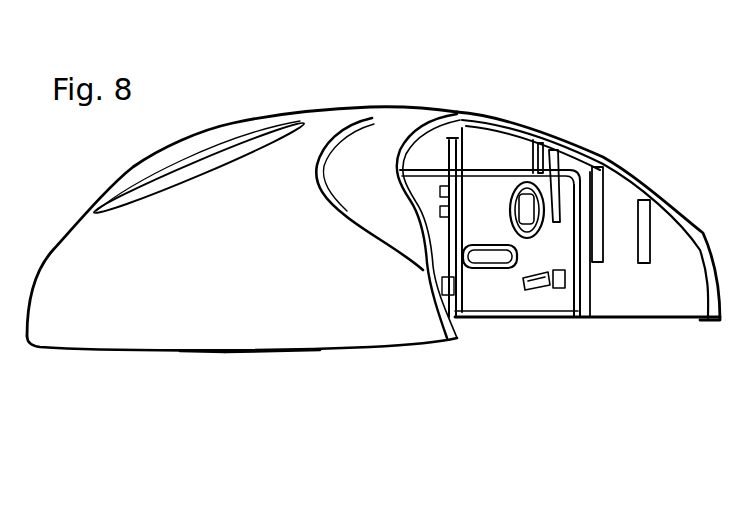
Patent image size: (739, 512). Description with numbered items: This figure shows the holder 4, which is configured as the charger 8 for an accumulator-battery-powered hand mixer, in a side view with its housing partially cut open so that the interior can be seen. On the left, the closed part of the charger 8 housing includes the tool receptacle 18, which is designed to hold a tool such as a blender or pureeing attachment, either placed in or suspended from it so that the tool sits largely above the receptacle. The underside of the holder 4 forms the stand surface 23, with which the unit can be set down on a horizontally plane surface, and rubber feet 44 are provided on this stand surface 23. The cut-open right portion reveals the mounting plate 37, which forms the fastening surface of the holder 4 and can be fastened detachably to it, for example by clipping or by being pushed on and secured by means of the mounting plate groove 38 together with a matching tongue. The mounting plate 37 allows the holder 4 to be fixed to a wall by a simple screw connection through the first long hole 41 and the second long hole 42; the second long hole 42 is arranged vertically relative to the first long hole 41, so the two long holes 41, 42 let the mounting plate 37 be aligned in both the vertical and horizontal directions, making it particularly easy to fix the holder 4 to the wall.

The holder 4 is at (403, 113).
The charger 8 is at (67, 270).
The tool receptacle 18 is at (353, 176).
The stand surface 23 is at (268, 352).
The mounting plate 37 is at (500, 300).
The mounting plate groove 38 is at (588, 320).
The first long hole 41 is at (513, 210).
The second long hole 42 is at (487, 270).
The rubber feet 44 is at (200, 353).